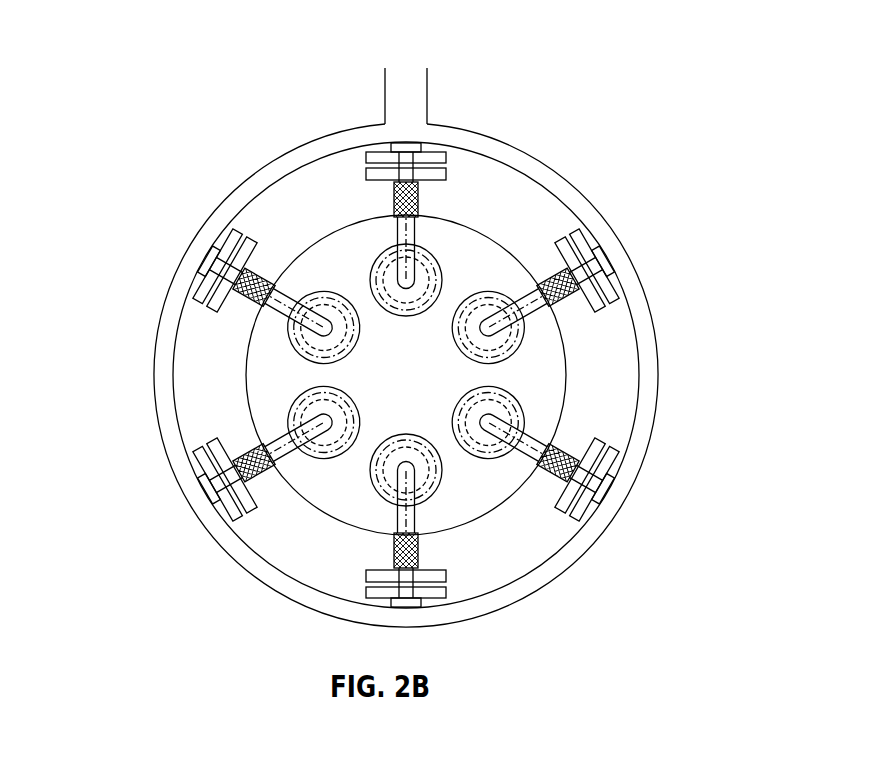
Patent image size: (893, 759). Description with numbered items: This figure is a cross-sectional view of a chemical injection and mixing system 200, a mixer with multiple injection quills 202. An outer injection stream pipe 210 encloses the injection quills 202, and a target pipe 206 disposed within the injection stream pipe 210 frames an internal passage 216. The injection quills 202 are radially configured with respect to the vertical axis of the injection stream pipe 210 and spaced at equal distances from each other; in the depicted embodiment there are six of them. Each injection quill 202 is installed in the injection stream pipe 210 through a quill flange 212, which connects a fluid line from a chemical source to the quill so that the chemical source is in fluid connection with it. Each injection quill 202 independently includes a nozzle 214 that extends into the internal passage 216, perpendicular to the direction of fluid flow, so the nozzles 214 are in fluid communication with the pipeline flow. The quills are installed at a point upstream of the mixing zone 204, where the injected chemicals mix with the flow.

The chemical injection and mixing system 200 is at (147, 53).
The injection quills 202 is at (420, 172).
The mixing zone 204 is at (498, 300).
The target pipe 206 is at (482, 233).
The injection stream pipe 210 is at (255, 180).
The quill flange 212 is at (614, 259).
The nozzle 214 is at (490, 340).
The internal passage 216 is at (427, 384).